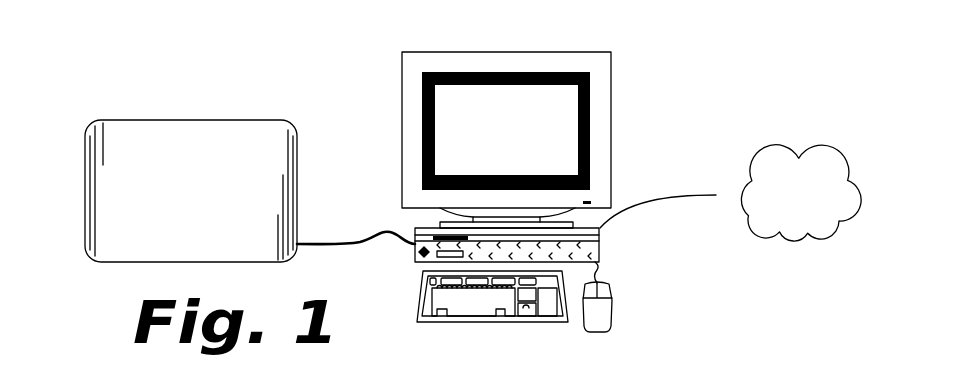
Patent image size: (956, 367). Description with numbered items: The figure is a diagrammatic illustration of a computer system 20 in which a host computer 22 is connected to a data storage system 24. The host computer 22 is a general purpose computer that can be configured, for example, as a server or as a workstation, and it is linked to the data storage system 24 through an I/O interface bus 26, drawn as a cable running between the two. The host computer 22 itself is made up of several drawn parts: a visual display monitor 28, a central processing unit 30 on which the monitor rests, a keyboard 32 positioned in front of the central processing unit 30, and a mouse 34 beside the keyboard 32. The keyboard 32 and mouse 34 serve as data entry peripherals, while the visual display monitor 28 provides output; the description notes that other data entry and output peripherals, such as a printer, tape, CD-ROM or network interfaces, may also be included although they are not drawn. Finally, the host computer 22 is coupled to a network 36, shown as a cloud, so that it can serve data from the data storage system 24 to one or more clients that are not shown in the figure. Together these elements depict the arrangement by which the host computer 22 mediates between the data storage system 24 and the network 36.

The computer system 20 is at (239, 45).
The host computer 22 is at (501, 47).
The data storage system 24 is at (190, 122).
The I/O interface bus 26 is at (383, 232).
The visual display monitor 28 is at (612, 121).
The central processing unit (CPU) 30 is at (597, 247).
The keyboard 32 is at (431, 298).
The mouse 34 is at (617, 299).
The network 36 is at (763, 150).